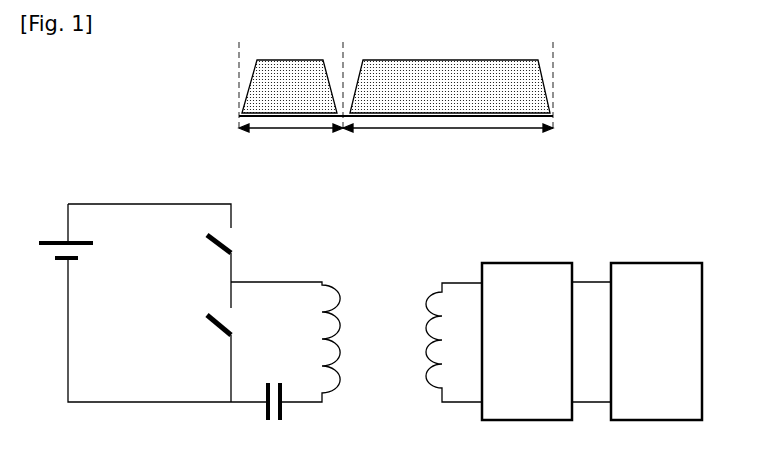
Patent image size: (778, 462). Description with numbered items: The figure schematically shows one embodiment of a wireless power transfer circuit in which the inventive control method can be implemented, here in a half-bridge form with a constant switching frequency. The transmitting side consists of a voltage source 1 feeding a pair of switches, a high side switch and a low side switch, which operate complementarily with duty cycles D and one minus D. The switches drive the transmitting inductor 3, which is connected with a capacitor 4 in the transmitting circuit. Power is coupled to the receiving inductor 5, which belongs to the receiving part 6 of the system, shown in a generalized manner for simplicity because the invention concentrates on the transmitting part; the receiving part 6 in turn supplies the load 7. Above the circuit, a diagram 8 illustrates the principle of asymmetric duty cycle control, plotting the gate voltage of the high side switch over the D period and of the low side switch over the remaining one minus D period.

The voltage source 1 is at (62, 238).
The transmitting (Tx) inductor 3 is at (333, 285).
The capacitor 4 is at (288, 412).
The receiving (Rx) inductor 5 is at (432, 290).
The receiving (Rx) part 6 is at (515, 262).
The load 7 is at (643, 262).
The diagram 8 is at (557, 90).